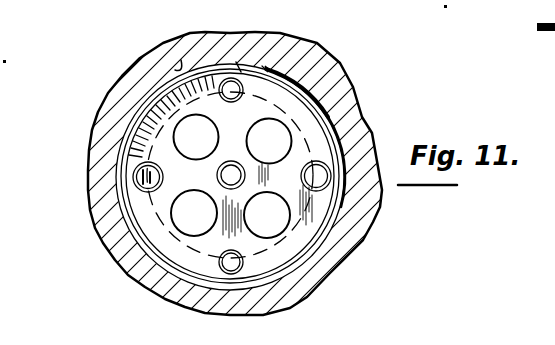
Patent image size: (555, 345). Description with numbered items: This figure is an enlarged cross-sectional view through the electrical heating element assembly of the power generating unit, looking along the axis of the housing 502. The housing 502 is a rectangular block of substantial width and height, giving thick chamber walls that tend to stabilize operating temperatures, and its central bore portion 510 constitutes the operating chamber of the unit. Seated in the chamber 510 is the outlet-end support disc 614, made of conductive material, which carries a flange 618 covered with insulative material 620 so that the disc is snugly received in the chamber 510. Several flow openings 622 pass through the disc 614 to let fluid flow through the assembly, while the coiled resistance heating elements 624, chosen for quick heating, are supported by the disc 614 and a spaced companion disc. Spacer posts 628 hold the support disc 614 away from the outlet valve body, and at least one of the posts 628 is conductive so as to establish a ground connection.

The housing 502 is at (328, 75).
The central bore portion 510 is at (181, 60).
The support disc 614 is at (150, 112).
The flange 618 is at (236, 62).
The insulative material 620 is at (290, 64).
The flow openings 622 is at (201, 118).
The coiled resistance heating elements 624 is at (232, 176).
The spacer posts 628 is at (128, 197).